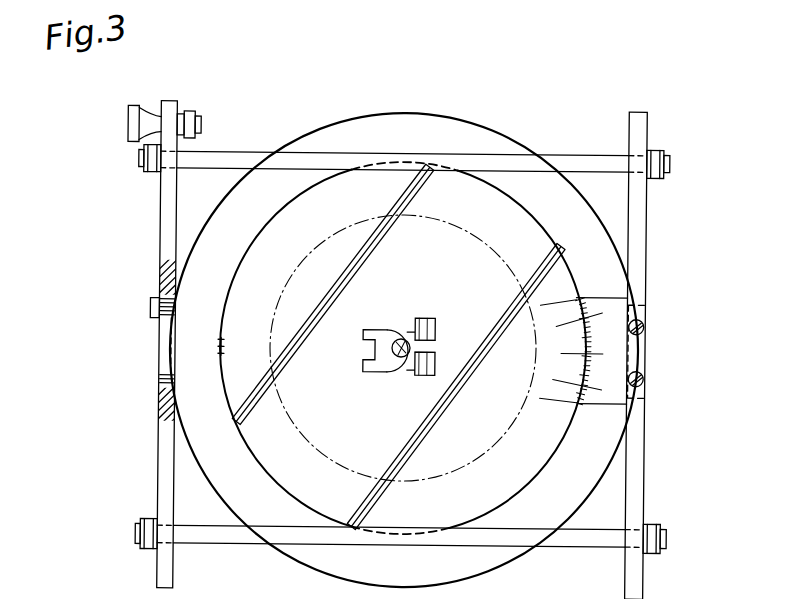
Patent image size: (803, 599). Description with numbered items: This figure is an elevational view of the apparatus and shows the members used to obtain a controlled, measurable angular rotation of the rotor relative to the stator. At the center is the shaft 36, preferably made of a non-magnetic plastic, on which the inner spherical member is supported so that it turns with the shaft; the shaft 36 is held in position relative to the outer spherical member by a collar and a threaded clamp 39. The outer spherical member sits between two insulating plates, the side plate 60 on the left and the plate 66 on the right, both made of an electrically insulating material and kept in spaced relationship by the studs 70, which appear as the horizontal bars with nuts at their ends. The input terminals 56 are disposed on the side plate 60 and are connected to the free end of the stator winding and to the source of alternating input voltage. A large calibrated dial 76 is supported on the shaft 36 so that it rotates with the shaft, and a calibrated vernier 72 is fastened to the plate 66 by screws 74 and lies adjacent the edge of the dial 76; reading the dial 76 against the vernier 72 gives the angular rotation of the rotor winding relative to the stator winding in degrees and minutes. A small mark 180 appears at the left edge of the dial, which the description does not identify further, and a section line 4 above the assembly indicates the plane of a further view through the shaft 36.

The section line of FIG. 4 is at (404, 100).
The shaft 36 is at (401, 340).
The threaded clamp 39 is at (410, 371).
The input terminals 56 is at (182, 118).
The side plate 60 is at (160, 457).
The plate 66 is at (637, 486).
The studs 70 is at (590, 165).
The calibrated vernier 72 is at (598, 403).
The screws 74 is at (642, 375).
The calibrated dial 76 is at (497, 188).
The index mark 180 is at (224, 347).